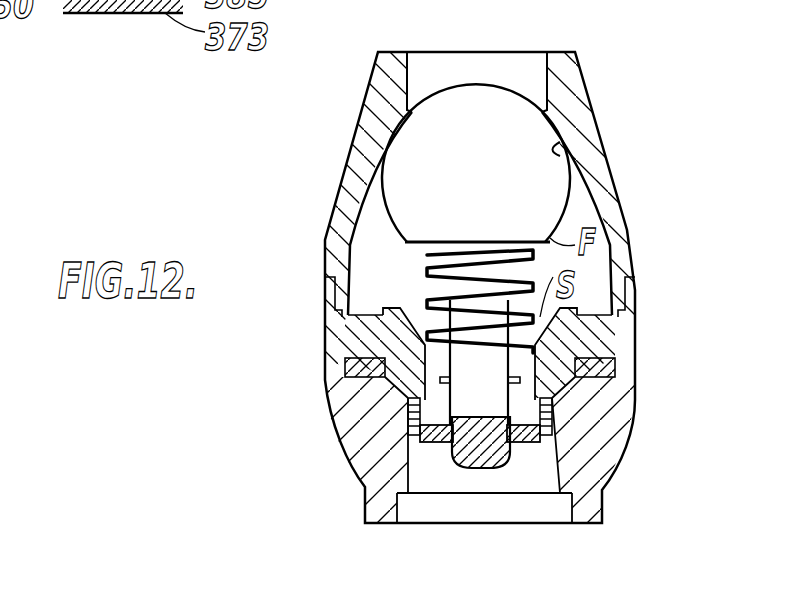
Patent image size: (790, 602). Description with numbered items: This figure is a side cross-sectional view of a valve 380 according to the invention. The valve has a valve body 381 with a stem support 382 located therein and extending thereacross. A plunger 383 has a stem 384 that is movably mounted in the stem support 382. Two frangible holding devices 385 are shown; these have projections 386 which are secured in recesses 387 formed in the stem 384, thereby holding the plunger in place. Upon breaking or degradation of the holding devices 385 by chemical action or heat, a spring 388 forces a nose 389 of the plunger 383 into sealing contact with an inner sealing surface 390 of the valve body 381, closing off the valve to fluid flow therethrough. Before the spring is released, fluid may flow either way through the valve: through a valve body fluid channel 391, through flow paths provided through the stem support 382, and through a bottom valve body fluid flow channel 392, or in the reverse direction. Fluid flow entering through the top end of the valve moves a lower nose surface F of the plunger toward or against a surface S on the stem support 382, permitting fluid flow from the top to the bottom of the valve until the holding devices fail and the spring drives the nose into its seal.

The valve 380 is at (325, 155).
The valve body 381 is at (587, 90).
The stem support 382 is at (572, 333).
The plunger 383 is at (405, 224).
The stem 384 is at (430, 285).
The frangible holding devices 385 is at (420, 432).
The projections 386 is at (470, 470).
The recesses 387 is at (493, 470).
The spring 388 is at (400, 336).
The nose 389 is at (462, 93).
The inner sealing surface 390 is at (572, 150).
The valve body fluid channel 391 is at (373, 188).
The bottom valve body fluid flow channel 392 is at (553, 483).